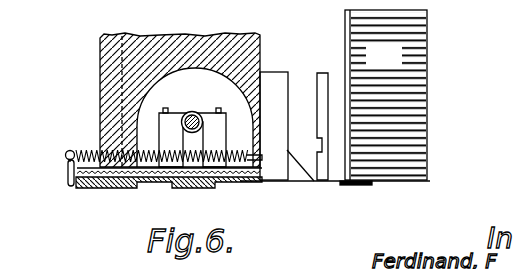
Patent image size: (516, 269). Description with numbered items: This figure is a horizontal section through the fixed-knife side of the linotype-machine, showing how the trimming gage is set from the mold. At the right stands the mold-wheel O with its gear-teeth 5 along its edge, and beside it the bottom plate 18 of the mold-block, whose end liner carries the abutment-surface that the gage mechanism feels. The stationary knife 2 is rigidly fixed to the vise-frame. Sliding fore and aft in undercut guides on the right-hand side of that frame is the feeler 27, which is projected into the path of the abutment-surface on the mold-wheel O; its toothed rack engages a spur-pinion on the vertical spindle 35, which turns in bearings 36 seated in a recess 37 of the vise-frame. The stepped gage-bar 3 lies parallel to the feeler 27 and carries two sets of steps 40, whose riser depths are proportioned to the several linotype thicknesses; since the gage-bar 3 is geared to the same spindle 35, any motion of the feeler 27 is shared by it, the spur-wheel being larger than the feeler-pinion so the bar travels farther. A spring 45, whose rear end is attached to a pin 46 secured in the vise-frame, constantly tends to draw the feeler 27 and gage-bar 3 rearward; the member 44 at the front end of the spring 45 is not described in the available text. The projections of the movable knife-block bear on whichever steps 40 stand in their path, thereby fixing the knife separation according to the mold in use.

The stationary knife 2 is at (280, 72).
The gage-bar 3 is at (169, 190).
The gear-teeth of the mold-wheel 5 is at (405, 95).
The bottom plate of the mold-block 18 is at (331, 77).
The feeler 27 is at (300, 182).
The vertical spindle 35 is at (204, 113).
The bearings 36 is at (184, 113).
The recess 37 is at (212, 138).
The steps 40 is at (126, 188).
The hook 44 is at (67, 175).
The spring 45 is at (80, 150).
The pin 46 is at (280, 165).
The mold-wheel O is at (382, 56).